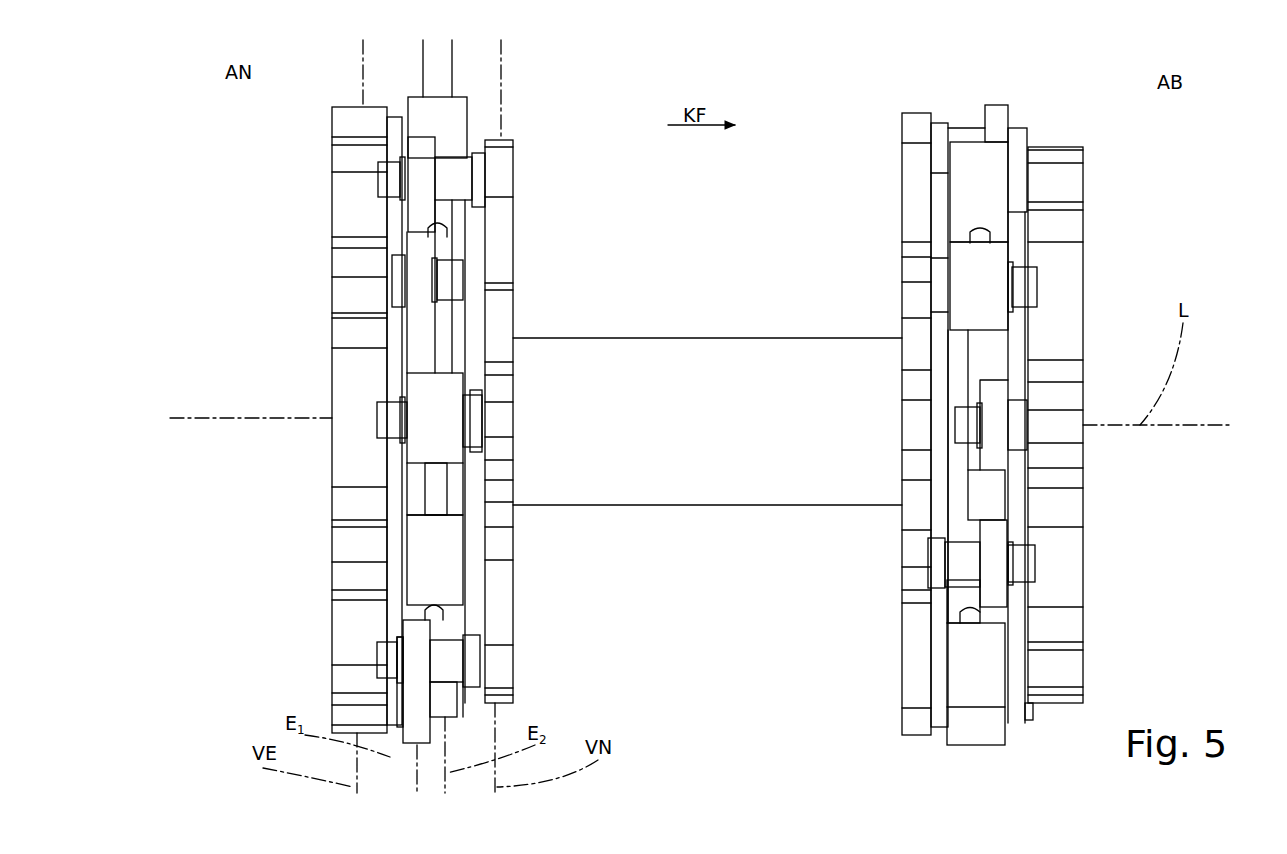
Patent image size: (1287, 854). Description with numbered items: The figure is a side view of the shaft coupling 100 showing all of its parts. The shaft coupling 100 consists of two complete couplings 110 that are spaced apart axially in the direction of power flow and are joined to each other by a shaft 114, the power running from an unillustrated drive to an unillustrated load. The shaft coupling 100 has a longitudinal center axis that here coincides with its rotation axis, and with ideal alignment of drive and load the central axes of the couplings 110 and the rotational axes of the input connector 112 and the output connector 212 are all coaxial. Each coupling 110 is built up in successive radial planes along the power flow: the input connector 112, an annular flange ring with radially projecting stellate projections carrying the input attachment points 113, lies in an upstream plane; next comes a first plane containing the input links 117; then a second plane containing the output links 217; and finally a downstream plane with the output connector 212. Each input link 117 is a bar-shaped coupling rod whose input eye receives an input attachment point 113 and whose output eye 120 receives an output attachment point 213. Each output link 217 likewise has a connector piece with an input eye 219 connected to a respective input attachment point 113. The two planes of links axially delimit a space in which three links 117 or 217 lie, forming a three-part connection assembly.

The shaft coupling 100 is at (1135, 165).
The coupling 110 is at (315, 197).
The input connector 112 is at (315, 503).
The input attachment point 113 is at (397, 558).
The shaft 114 is at (722, 434).
The input link 117 is at (425, 487).
The output eye 120 is at (410, 660).
The output connector 212 is at (515, 548).
The output attachment point 213 is at (455, 665).
The output link 217 is at (463, 493).
The input eye 219 is at (465, 588).